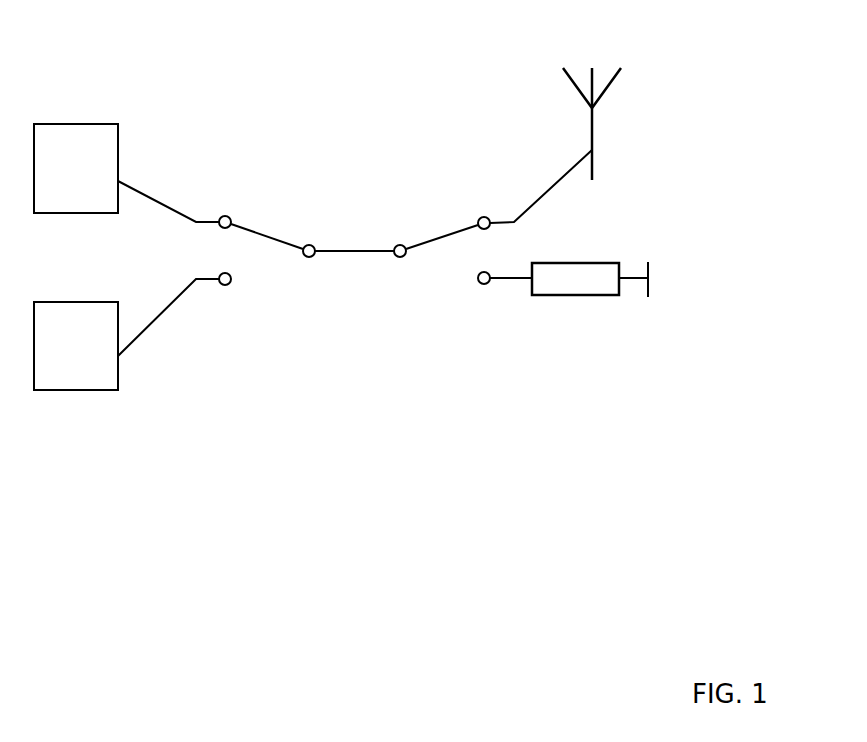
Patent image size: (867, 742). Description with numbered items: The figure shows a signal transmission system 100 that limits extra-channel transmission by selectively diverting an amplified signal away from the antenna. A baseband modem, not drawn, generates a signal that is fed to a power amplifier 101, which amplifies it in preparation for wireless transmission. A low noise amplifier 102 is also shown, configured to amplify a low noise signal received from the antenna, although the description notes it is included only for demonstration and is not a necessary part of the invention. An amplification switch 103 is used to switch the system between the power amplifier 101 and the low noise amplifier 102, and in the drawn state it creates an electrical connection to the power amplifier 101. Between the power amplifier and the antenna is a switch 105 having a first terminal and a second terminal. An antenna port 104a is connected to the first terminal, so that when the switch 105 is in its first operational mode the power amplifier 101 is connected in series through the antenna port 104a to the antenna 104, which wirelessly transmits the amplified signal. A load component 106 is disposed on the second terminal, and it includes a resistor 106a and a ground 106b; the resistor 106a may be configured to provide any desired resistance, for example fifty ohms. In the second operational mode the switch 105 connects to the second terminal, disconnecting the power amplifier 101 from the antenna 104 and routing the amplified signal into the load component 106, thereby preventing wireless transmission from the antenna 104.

The signal transmission system 100 is at (358, 442).
The power amplifier 101 is at (76, 183).
The low noise amplifier 102 is at (76, 361).
The amplification switch 103 is at (298, 268).
The antenna 104 is at (604, 124).
The antenna port 104a is at (484, 200).
The switch 105 is at (430, 226).
The load component 106 is at (626, 287).
The resistor 106a is at (583, 308).
The ground 106b is at (668, 297).